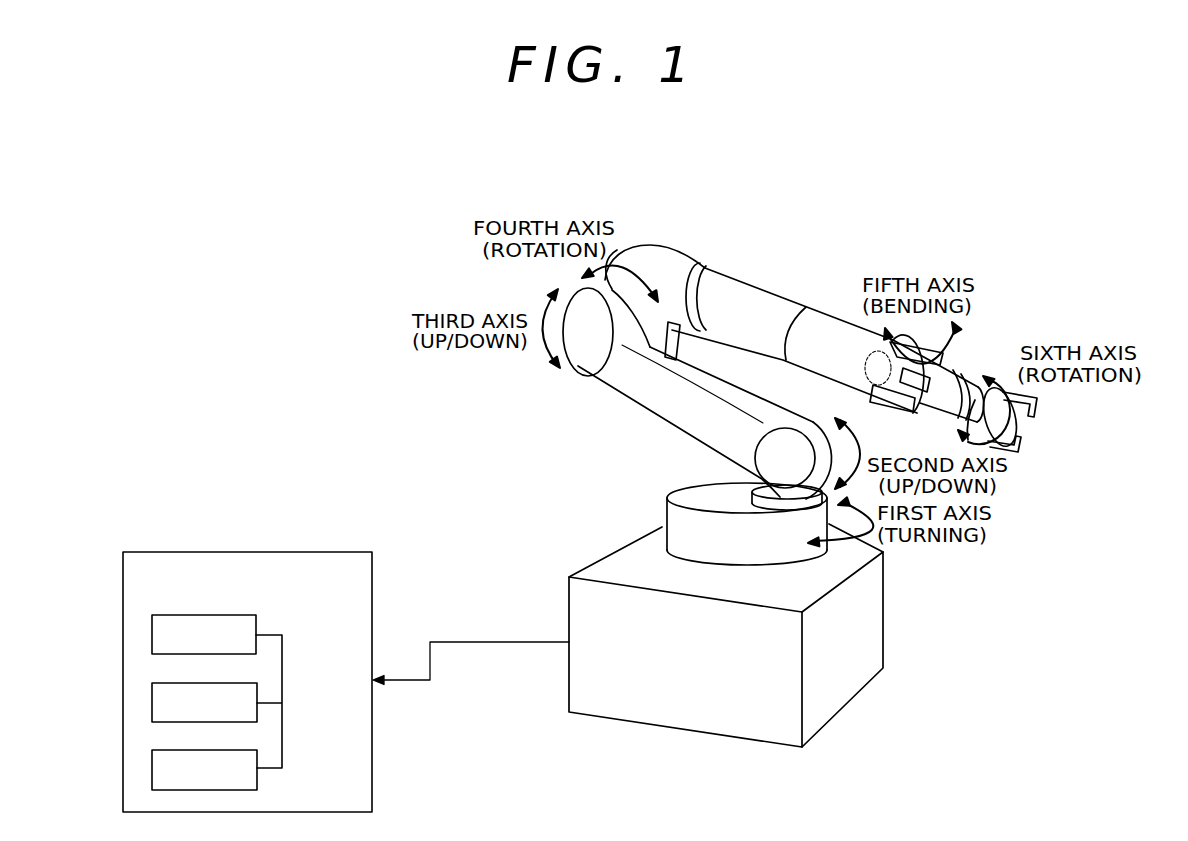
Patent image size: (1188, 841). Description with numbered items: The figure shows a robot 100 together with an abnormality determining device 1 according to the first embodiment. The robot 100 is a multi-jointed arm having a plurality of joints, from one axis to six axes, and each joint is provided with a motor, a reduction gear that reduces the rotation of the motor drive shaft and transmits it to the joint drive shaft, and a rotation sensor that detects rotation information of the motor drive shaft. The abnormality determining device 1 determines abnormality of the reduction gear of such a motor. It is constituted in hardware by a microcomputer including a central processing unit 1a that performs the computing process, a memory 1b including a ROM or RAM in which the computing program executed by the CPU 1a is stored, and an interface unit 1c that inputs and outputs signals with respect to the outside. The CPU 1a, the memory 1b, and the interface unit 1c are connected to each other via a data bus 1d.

The robot 100 is at (574, 177).
The abnormality determining device 1 is at (303, 552).
The central processing unit (CPU) 1a is at (152, 632).
The memory 1b is at (152, 701).
The interface unit (I/F) 1c is at (152, 769).
The data bus 1d is at (282, 683).